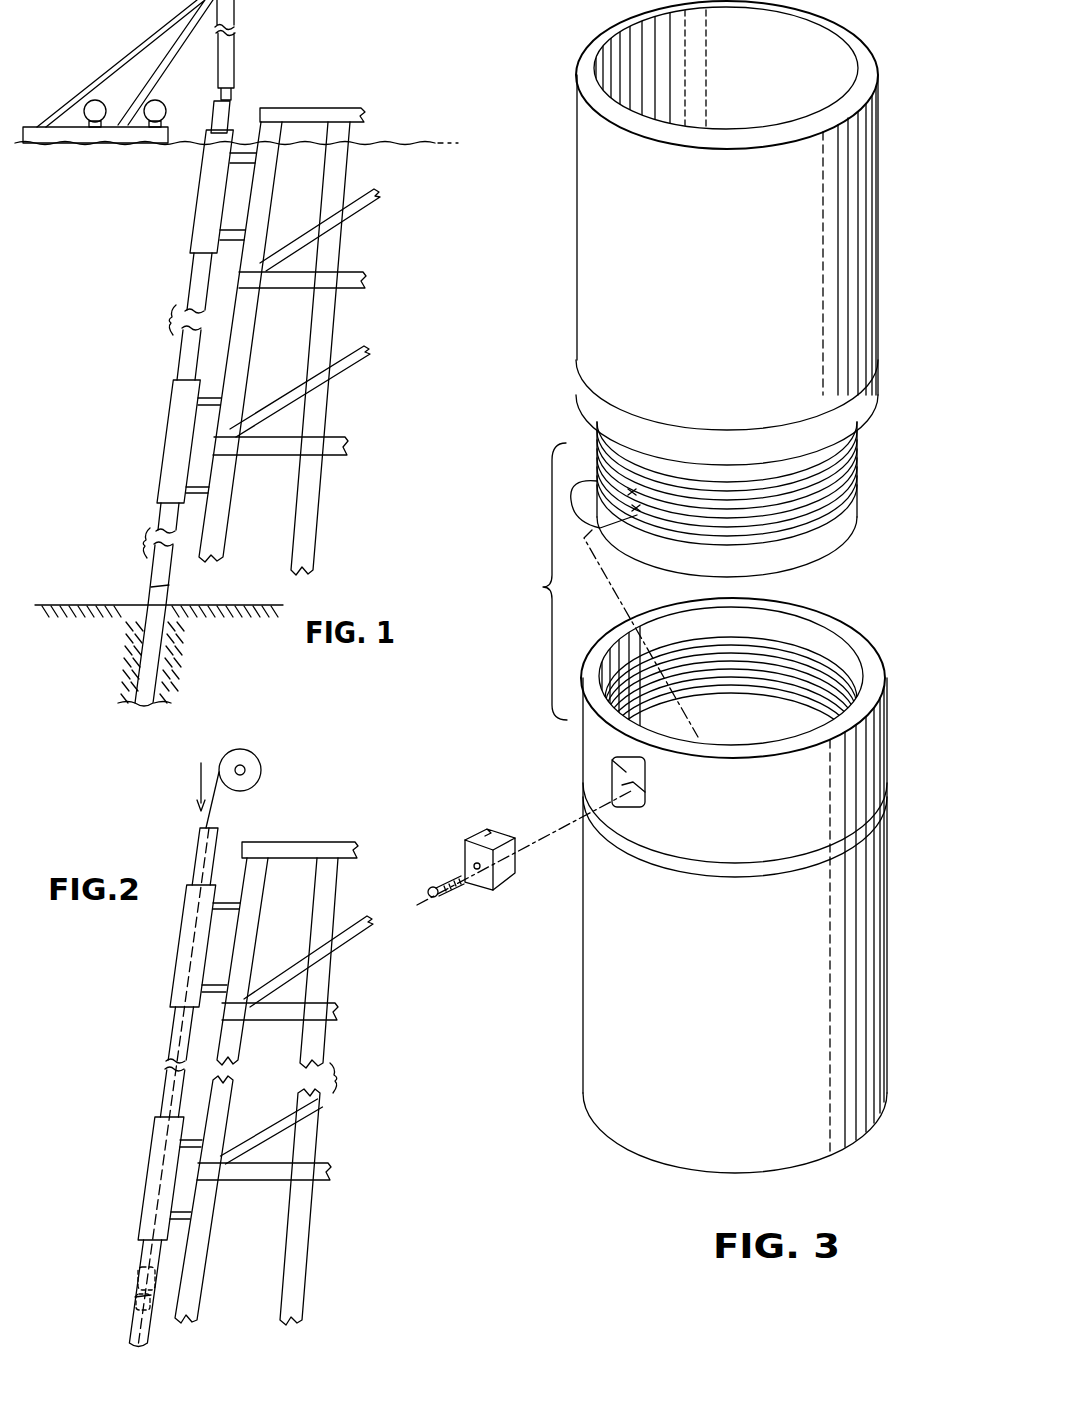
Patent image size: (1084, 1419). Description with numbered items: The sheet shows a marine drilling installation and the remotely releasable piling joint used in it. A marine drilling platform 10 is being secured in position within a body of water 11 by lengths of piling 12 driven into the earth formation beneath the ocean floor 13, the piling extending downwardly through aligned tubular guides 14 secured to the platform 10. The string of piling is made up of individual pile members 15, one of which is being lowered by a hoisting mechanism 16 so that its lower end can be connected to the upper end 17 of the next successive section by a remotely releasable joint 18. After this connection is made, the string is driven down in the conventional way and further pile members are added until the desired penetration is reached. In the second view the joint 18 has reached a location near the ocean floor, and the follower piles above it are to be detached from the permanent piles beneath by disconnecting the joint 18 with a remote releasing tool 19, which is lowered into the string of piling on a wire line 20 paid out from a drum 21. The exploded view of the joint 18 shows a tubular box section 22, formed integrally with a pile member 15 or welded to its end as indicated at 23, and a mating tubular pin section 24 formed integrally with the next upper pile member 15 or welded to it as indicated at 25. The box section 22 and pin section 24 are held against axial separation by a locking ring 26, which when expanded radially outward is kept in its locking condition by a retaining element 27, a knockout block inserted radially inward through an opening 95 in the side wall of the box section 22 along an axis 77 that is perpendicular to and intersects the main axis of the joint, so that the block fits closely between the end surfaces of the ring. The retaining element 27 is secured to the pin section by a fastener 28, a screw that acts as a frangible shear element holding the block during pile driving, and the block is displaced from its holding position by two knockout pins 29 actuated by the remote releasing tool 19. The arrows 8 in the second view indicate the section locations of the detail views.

In FIG. 2, the viewing direction arrows 8 is at (146, 1243).
In FIG. 1, the marine drilling platform 10 is at (313, 110).
In FIG. 2, the marine drilling platform 10 is at (316, 842).
In FIG. 1, the body of water 11 is at (424, 105).
In FIG. 1, the piling 12 is at (180, 355).
In FIG. 2, the piling 12 is at (165, 1073).
In FIG. 1, the ocean floor 13 is at (197, 603).
In FIG. 1, the tubular guides 14 is at (206, 181).
In FIG. 2, the tubular guides 14 is at (187, 958).
In FIG. 1, the pile members 15 is at (152, 565).
In FIG. 3, the pile members 15 is at (585, 237).
In FIG. 1, the hoisting mechanism 16 is at (135, 47).
In FIG. 1, the upper end 17 is at (222, 115).
In FIG. 2, the remotely releasable joint 18 is at (124, 1289).
In FIG. 3, the remotely releasable joint 18 is at (534, 581).
In FIG. 2, the remote releasing tool 19 is at (160, 1290).
In FIG. 2, the wire line 20 is at (215, 815).
In FIG. 2, the drum 21 is at (262, 769).
In FIG. 3, the tubular box section 22 is at (873, 765).
In FIG. 3, the weld 23 is at (758, 870).
In FIG. 3, the tubular pin section 24 is at (845, 437).
In FIG. 3, the weld 25 is at (707, 428).
In FIG. 3, the locking ring 26 is at (818, 507).
In FIG. 3, the retaining element 27 is at (482, 835).
In FIG. 3, the fastener 28 is at (450, 892).
In FIG. 3, the knockout pins 29 is at (600, 500).
In FIG. 3, the axis 77 is at (541, 830).
In FIG. 3, the opening 95 is at (630, 805).